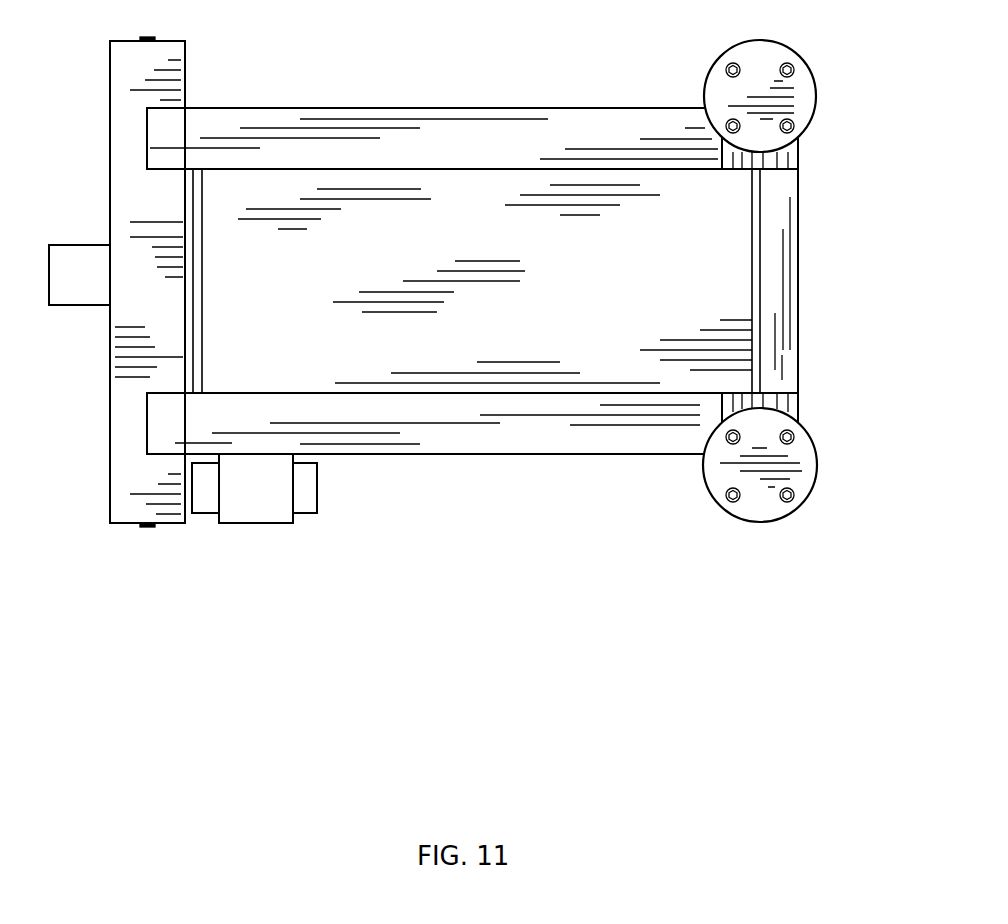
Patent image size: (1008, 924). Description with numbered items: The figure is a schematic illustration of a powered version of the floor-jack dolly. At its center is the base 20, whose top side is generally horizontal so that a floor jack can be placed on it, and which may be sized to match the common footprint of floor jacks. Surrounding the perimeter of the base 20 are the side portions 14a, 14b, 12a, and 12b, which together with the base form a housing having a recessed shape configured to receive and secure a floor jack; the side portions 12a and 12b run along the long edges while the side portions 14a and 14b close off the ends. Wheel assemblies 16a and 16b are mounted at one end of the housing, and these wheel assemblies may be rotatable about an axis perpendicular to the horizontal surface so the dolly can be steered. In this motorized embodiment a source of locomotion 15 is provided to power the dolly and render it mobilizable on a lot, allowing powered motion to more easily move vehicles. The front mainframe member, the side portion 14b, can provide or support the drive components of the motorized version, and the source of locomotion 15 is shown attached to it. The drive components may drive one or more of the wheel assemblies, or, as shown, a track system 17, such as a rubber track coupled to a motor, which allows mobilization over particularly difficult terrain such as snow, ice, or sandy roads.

The side portion 12a is at (577, 123).
The side portion 12b is at (415, 445).
The side portion 14a is at (792, 255).
The side portion 14b is at (122, 111).
The source of locomotion 15 is at (68, 243).
The wheel assembly 16a is at (796, 522).
The wheel assembly 16b is at (796, 42).
The track system 17 is at (275, 515).
The base 20 is at (625, 294).